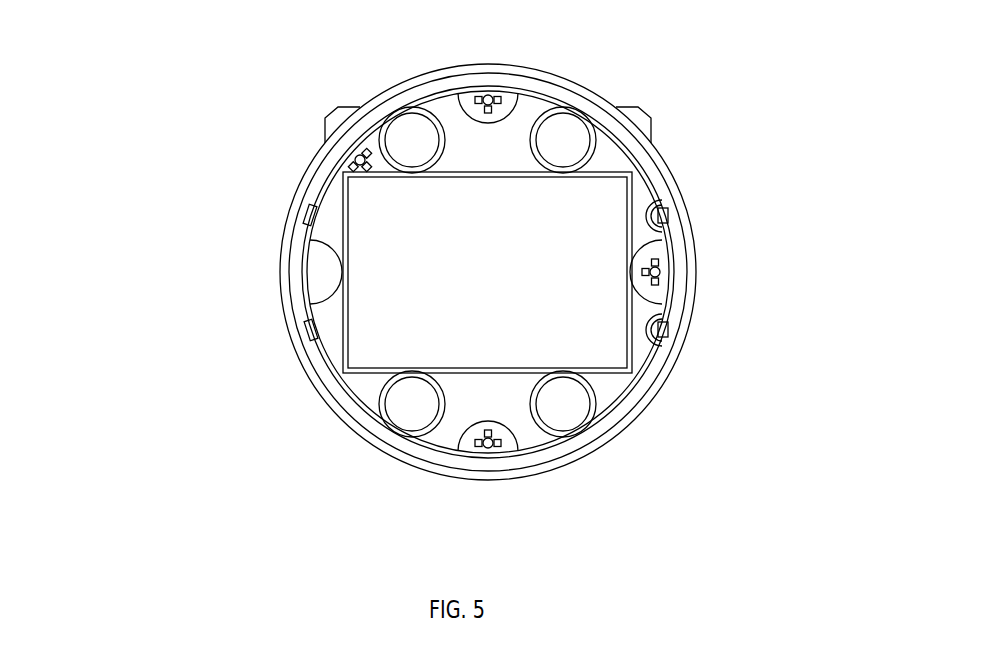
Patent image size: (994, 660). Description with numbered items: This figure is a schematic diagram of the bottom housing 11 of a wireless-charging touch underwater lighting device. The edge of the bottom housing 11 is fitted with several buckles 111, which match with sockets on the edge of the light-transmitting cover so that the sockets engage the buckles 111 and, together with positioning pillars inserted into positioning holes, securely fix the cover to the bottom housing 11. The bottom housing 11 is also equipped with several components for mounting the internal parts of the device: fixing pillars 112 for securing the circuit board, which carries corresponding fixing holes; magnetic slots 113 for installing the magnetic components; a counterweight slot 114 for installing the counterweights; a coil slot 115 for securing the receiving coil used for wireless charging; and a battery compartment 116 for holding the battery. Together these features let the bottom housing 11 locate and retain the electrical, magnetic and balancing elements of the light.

The bottom housing 11 is at (538, 70).
The buckle 111 is at (668, 330).
The fixing pillar 112 is at (480, 450).
The magnetic slot 113 is at (413, 122).
The counterweight slot 114 is at (497, 133).
The coil slot 115 is at (468, 227).
The battery compartment 116 is at (335, 372).